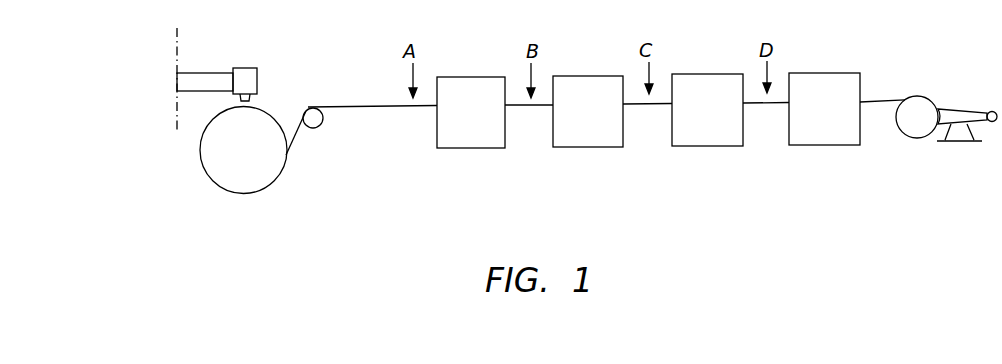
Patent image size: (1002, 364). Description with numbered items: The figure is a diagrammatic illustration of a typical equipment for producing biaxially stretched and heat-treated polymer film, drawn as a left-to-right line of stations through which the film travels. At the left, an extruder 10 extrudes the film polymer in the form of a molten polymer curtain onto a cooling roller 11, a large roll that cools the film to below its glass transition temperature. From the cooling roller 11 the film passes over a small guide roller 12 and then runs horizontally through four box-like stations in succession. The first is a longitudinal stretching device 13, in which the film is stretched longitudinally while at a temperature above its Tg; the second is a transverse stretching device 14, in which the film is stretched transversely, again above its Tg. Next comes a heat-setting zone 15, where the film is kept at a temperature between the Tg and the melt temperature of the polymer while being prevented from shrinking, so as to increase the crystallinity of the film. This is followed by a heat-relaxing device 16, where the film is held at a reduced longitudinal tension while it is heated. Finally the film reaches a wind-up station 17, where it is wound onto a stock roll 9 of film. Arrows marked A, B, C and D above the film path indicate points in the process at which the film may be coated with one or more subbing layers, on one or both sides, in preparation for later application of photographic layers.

The stock roll 9 is at (920, 127).
The extruder 10 is at (217, 80).
The cooling roller 11 is at (227, 178).
The guide roller 12 is at (315, 128).
The longitudinal stretching device 13 is at (472, 145).
The transverse stretching device 14 is at (589, 142).
The heat-setting zone 15 is at (714, 137).
The heat-relaxing device 16 is at (832, 135).
The wind-up station 17 is at (966, 103).